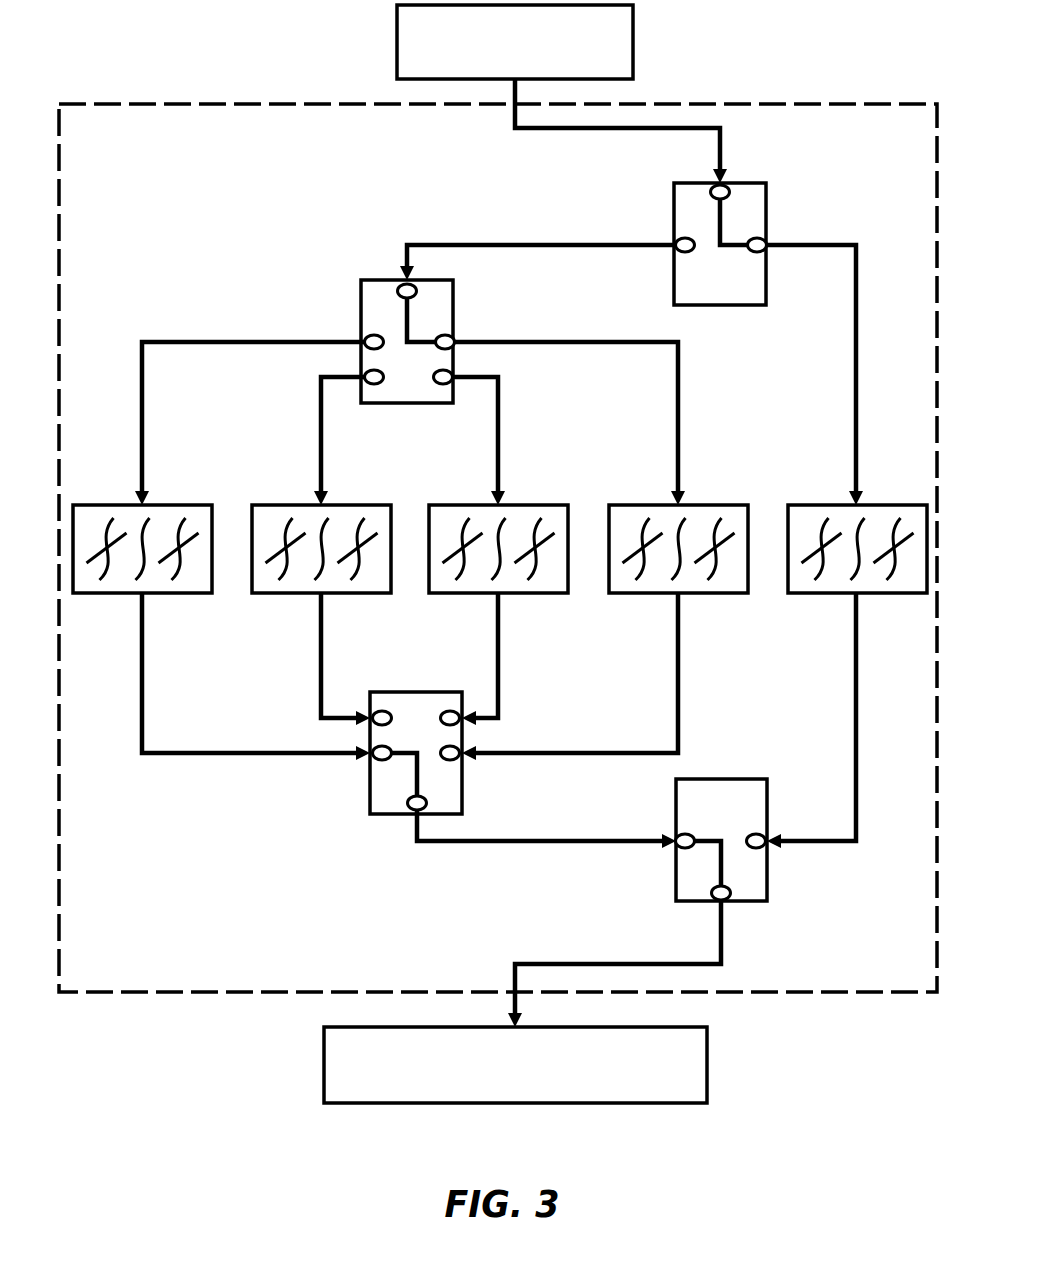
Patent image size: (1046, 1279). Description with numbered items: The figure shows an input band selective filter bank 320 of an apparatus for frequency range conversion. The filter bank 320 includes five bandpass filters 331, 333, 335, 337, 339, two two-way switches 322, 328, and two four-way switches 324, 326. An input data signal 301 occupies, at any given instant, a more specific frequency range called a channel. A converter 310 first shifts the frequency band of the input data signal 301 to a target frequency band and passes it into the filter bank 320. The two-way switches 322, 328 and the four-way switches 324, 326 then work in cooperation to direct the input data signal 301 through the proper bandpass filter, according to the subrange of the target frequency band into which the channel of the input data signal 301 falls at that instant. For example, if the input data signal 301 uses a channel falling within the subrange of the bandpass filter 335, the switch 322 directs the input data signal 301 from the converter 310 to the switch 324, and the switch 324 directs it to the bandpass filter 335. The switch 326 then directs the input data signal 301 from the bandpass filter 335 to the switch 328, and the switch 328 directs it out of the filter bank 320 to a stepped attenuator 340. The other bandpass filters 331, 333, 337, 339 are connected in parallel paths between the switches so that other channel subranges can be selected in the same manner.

The input data signal 301 is at (515, 118).
The converter 310 is at (633, 32).
The input band selective filter bank 320 is at (237, 104).
The two-way switch 322 is at (766, 205).
The four-way switch 324 is at (378, 280).
The four-way switch 326 is at (370, 788).
The two-way switch 328 is at (719, 779).
The bandpass filter 331 is at (175, 594).
The bandpass filter 333 is at (282, 505).
The bandpass filter 335 is at (531, 594).
The bandpass filter 337 is at (640, 505).
The bandpass filter 339 is at (813, 505).
The stepped attenuator 340 is at (324, 1065).